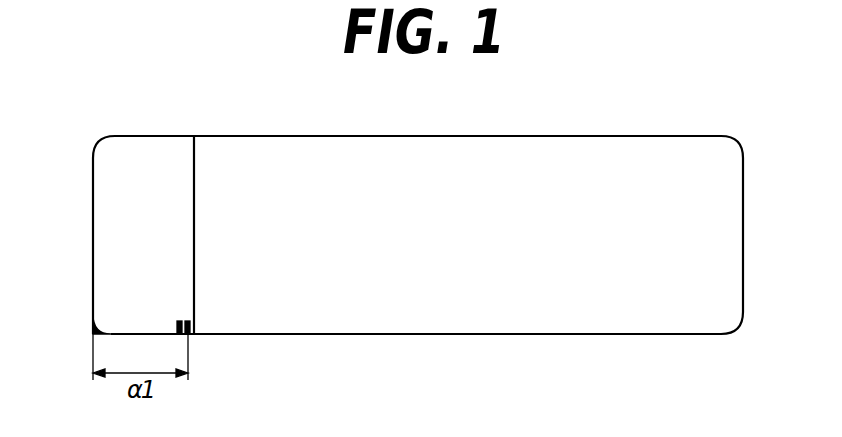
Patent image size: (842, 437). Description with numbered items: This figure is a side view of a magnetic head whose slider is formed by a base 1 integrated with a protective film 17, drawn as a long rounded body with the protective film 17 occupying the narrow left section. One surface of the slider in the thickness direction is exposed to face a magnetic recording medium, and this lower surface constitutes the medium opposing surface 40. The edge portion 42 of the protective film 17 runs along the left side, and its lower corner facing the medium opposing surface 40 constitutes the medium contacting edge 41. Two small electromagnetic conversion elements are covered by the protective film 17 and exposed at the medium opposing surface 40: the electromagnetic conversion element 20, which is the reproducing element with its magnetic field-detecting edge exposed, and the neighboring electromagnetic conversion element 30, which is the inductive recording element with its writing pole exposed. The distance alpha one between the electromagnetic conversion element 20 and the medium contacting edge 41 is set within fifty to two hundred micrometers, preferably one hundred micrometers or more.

The base 1 is at (283, 145).
The protective film 17 is at (153, 147).
The electromagnetic conversion element 20 is at (187, 320).
The electromagnetic conversion element 30 is at (178, 326).
The medium opposing surface 40 is at (368, 342).
The medium contacting edge 41 is at (93, 318).
The edge portion 42 is at (92, 232).